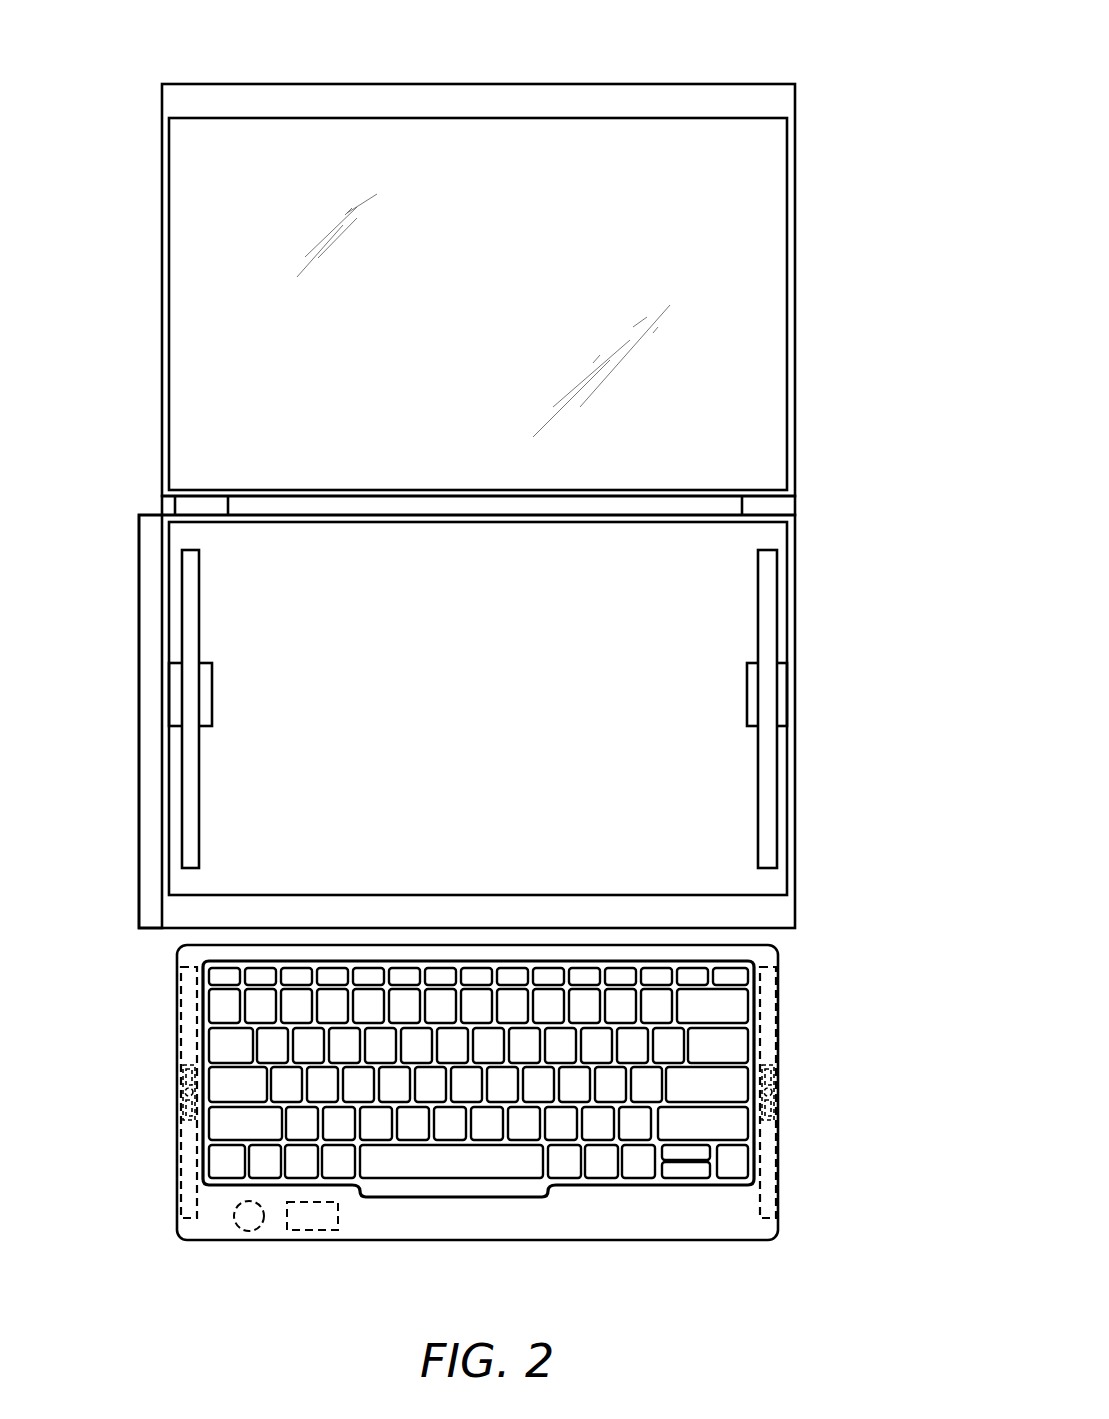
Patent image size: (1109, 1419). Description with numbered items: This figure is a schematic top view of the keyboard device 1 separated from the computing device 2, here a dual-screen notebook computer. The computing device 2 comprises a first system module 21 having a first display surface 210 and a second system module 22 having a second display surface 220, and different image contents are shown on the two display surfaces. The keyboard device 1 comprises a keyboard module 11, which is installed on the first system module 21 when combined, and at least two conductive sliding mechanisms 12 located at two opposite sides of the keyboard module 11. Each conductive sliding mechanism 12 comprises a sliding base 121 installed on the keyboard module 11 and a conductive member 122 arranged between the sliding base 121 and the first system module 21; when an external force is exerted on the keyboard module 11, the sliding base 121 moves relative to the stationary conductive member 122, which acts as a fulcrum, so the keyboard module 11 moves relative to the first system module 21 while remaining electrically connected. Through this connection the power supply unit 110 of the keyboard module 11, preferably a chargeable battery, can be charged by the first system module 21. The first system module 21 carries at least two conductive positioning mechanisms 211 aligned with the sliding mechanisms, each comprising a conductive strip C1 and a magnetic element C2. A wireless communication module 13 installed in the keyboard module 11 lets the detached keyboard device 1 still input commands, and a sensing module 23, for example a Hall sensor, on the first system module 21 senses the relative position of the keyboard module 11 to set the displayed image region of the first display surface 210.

The keyboard device 1 is at (479, 1125).
The keyboard module 11 is at (570, 1222).
The power supply unit 110 is at (249, 1231).
The conductive sliding mechanism 12 is at (479, 1092).
The sliding base 121 is at (181, 1165).
The conductive member 122 is at (483, 1090).
The wireless communication module 13 is at (313, 1230).
The computing device 2 is at (483, 465).
The first system module 21 is at (483, 721).
The first display surface 210 is at (483, 708).
The conductive positioning mechanism 211 is at (483, 709).
The conductive strip C1 is at (186, 610).
The magnetic element C2 is at (175, 700).
The second system module 22 is at (517, 290).
The second display surface 220 is at (753, 362).
The sensing module 23 is at (148, 863).